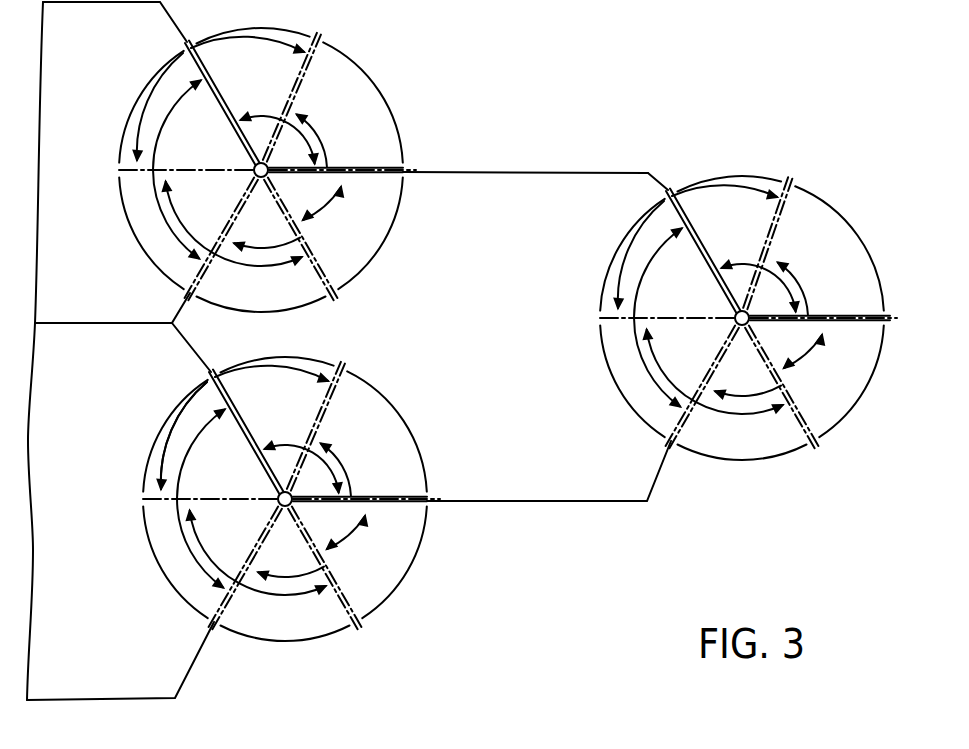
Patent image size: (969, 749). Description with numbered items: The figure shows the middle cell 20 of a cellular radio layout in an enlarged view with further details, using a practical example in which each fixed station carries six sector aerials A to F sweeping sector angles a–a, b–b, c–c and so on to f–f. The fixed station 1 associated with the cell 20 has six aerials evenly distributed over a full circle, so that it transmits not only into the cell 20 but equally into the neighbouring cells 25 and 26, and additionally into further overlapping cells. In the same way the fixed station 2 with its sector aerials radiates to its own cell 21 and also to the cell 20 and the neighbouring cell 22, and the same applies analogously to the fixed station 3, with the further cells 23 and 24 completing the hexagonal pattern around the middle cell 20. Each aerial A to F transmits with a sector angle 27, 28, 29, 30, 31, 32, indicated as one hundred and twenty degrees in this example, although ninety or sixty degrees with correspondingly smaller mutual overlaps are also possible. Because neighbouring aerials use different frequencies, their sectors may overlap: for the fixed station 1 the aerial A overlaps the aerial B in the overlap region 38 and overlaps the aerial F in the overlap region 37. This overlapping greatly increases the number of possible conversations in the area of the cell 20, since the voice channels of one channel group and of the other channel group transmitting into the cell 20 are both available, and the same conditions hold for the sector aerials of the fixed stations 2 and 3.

The fixed station 1 is at (272, 512).
The fixed station 2 is at (258, 167).
The fixed station 3 is at (745, 316).
The cell 20 is at (421, 337).
The cell 21 is at (525, 139).
The cell 22 is at (107, 351).
The cell 23 is at (797, 130).
The cell 24 is at (805, 492).
The cell 25 is at (540, 552).
The cell 26 is at (120, 554).
The sector angle 27 is at (303, 440).
The sector angle 28 is at (359, 463).
The sector angle 29 is at (329, 547).
The sector angle 30 is at (256, 599).
The sector angle 31 is at (162, 511).
The sector angle 32 is at (165, 433).
The overlap region 37 is at (632, 250).
The overlap region 38 is at (643, 368).